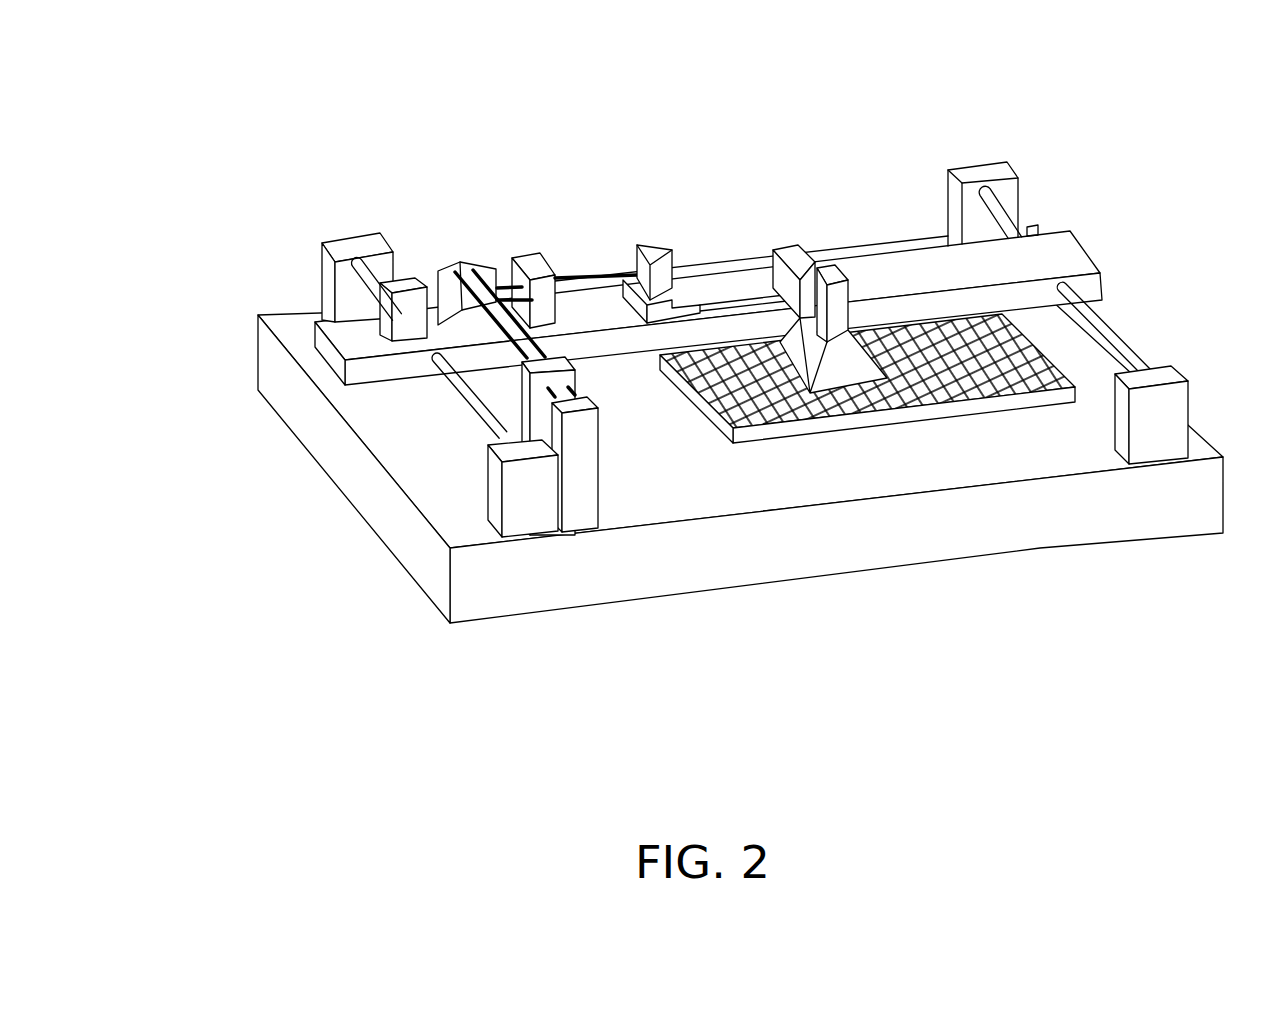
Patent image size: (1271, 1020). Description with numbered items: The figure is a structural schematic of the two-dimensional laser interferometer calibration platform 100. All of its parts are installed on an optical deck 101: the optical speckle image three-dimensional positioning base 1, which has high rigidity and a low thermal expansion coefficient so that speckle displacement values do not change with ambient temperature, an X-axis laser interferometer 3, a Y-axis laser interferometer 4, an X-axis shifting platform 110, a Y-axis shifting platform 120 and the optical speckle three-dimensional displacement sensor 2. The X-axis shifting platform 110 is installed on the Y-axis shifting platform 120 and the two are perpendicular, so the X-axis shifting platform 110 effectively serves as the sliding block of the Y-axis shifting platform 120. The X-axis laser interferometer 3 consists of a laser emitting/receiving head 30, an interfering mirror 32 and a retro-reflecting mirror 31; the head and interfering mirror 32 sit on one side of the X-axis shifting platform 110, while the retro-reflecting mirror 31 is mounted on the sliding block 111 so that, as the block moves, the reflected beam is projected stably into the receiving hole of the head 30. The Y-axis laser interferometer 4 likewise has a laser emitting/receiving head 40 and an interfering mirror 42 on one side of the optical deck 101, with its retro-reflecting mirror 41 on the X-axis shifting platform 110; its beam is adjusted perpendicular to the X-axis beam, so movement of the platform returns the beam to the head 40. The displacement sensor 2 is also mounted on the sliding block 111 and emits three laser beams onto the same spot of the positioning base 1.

The two-dimensional laser interferometer calibration platform 100 is at (147, 97).
The optical speckle image three-dimensional positioning base 1 is at (935, 365).
The optical speckle three-dimensional displacement sensor 2 is at (802, 222).
The X-axis laser interferometer 3 is at (552, 149).
The laser emitting/receiving head 30 is at (393, 313).
The retro-reflecting mirror 31 is at (649, 247).
The interfering mirror 32 is at (528, 258).
The Y-axis laser interferometer 4 is at (466, 430).
The laser emitting/receiving head 40 is at (580, 480).
The retro-reflecting mirror 41 is at (470, 262).
The interfering mirror 42 is at (520, 368).
The optical deck 101 is at (863, 545).
The X-axis shifting platform 110 is at (378, 368).
The sliding block 111 is at (723, 285).
The Y-axis shifting platform 120 is at (523, 492).